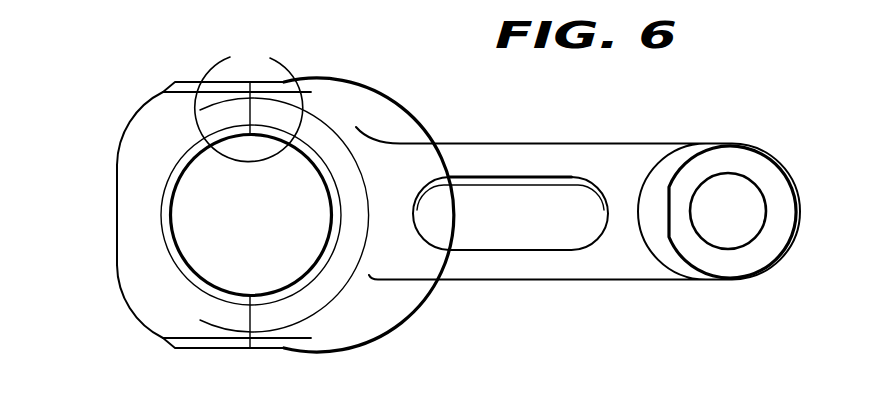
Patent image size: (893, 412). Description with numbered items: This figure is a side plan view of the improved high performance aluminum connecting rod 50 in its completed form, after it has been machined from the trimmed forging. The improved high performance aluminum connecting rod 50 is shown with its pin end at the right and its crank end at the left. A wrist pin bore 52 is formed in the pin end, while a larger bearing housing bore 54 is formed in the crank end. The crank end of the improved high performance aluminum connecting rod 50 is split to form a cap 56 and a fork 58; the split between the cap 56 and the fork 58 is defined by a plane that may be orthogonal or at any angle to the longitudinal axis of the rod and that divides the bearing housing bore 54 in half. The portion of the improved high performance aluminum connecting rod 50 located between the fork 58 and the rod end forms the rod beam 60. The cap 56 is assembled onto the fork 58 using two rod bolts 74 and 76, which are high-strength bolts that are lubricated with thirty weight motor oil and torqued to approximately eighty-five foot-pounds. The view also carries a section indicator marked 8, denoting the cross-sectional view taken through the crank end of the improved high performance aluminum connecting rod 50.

The improved high performance aluminum connecting rod 50 is at (100, 278).
The wrist pin bore 52 is at (747, 183).
The bearing housing bore 54 is at (323, 205).
The cap 56 is at (130, 170).
The fork 58 is at (346, 295).
The rod beam 60 is at (533, 223).
The rod bolt 74 is at (158, 89).
The rod bolt 76 is at (158, 341).
The section view indicator 8 is at (249, 96).